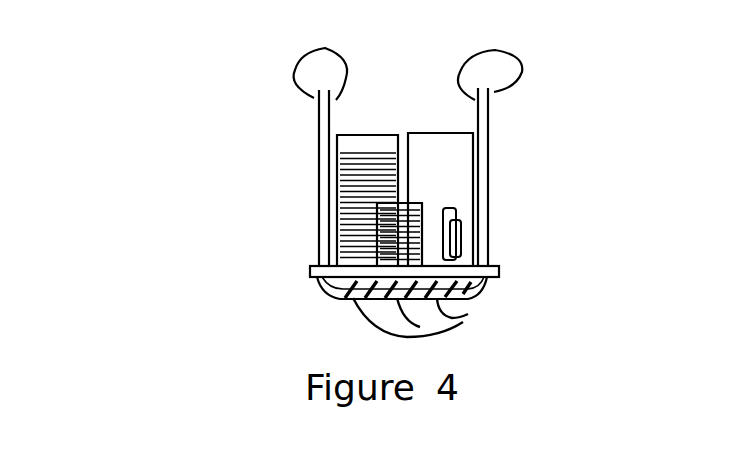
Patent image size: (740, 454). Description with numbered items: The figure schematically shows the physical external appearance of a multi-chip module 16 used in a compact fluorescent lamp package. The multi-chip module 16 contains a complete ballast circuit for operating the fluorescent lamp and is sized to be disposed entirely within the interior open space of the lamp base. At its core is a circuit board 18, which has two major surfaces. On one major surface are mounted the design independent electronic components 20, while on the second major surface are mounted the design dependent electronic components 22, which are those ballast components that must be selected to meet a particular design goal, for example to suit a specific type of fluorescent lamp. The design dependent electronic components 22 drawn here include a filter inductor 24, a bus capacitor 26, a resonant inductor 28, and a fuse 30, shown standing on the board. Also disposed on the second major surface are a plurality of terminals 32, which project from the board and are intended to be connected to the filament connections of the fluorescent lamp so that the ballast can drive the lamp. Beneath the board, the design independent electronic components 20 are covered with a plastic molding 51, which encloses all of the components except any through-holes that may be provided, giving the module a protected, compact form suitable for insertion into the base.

The multi-chip module 16 is at (176, 116).
The circuit board 18 is at (310, 272).
The design independent electronic components 20 is at (429, 316).
The design dependent electronic components 22 is at (404, 88).
The filter inductor 24 is at (420, 199).
The bus capacitor 26 is at (455, 152).
The resonant inductor 28 is at (345, 143).
The fuse 30 is at (456, 232).
The terminals 32 is at (320, 47).
The plastic molding 51 is at (337, 302).